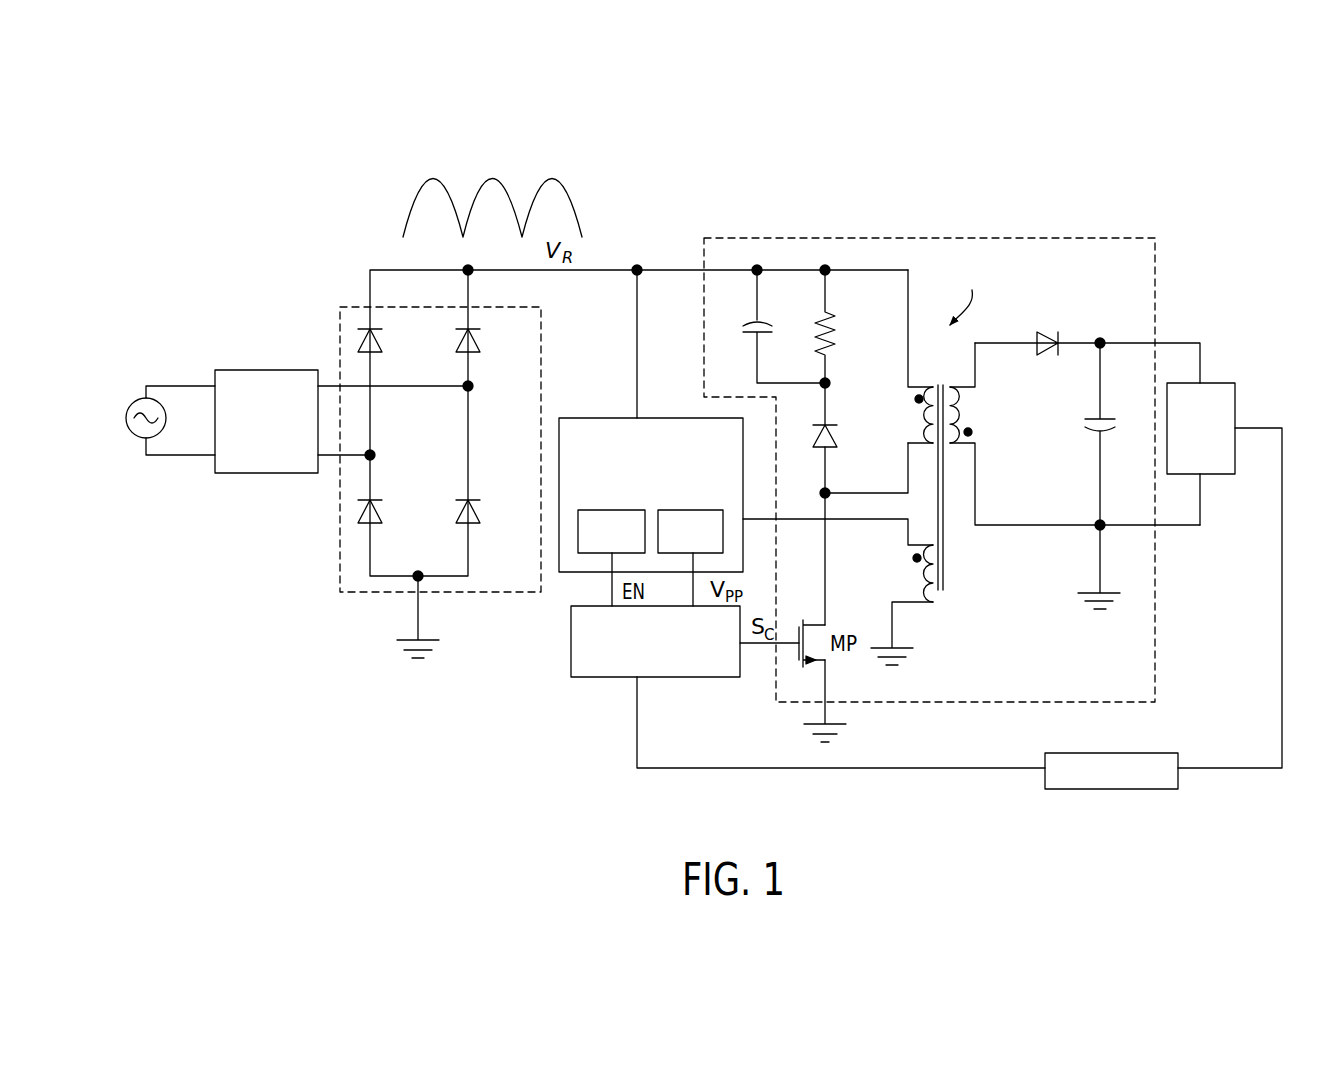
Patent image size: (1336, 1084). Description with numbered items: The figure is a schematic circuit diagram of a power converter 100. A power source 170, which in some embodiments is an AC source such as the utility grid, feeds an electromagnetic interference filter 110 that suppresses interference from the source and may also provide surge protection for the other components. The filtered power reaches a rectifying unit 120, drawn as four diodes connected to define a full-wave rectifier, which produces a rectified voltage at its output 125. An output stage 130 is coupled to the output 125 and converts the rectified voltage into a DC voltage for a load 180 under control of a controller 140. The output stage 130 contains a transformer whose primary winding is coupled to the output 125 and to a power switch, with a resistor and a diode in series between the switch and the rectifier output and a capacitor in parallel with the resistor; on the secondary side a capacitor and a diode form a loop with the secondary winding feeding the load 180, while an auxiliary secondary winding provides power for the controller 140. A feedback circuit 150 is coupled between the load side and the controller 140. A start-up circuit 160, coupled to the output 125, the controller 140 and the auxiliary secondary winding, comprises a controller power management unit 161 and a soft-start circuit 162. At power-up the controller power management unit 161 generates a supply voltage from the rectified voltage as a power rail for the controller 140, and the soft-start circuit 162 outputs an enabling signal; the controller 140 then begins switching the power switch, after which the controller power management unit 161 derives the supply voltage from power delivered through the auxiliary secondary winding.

The power converter 100 is at (1214, 168).
The electromagnetic interference (EMI) filter 110 is at (265, 370).
The rectifying unit 120 is at (353, 307).
The output 125 is at (637, 266).
The output stage 130 is at (1037, 238).
The controller 140 is at (603, 677).
The feedback circuit 150 is at (1112, 789).
The start-up circuit 160 is at (651, 465).
The controller power management unit 161 is at (690, 510).
The soft-start circuit 162 is at (612, 510).
The power source 170 is at (133, 404).
The load 180 is at (1218, 383).